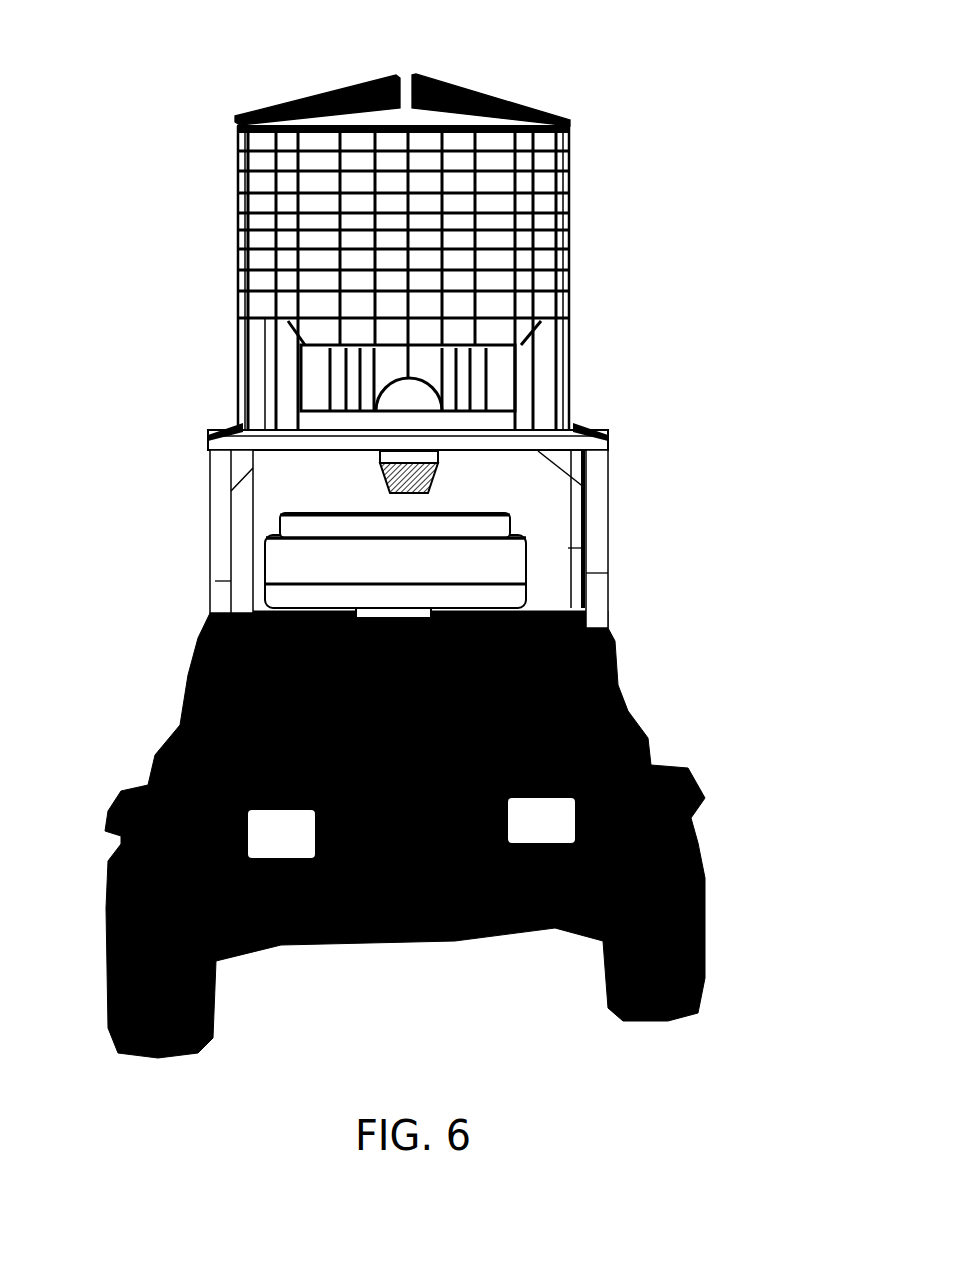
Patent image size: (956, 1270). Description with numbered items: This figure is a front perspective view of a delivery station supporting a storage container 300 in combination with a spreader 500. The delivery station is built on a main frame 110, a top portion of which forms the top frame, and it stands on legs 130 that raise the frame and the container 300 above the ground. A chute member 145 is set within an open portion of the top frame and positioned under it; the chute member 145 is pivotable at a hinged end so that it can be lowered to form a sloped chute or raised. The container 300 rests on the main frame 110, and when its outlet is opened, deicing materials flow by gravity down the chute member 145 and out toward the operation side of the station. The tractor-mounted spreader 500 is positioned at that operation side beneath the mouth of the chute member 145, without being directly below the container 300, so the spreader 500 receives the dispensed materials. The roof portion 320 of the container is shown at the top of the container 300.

The main frame 110 is at (600, 435).
The legs 130 is at (600, 585).
The chute member 145 is at (430, 457).
The container 300 is at (590, 107).
The roof 320 is at (435, 80).
The tractor-mounted spreader 500 is at (353, 507).